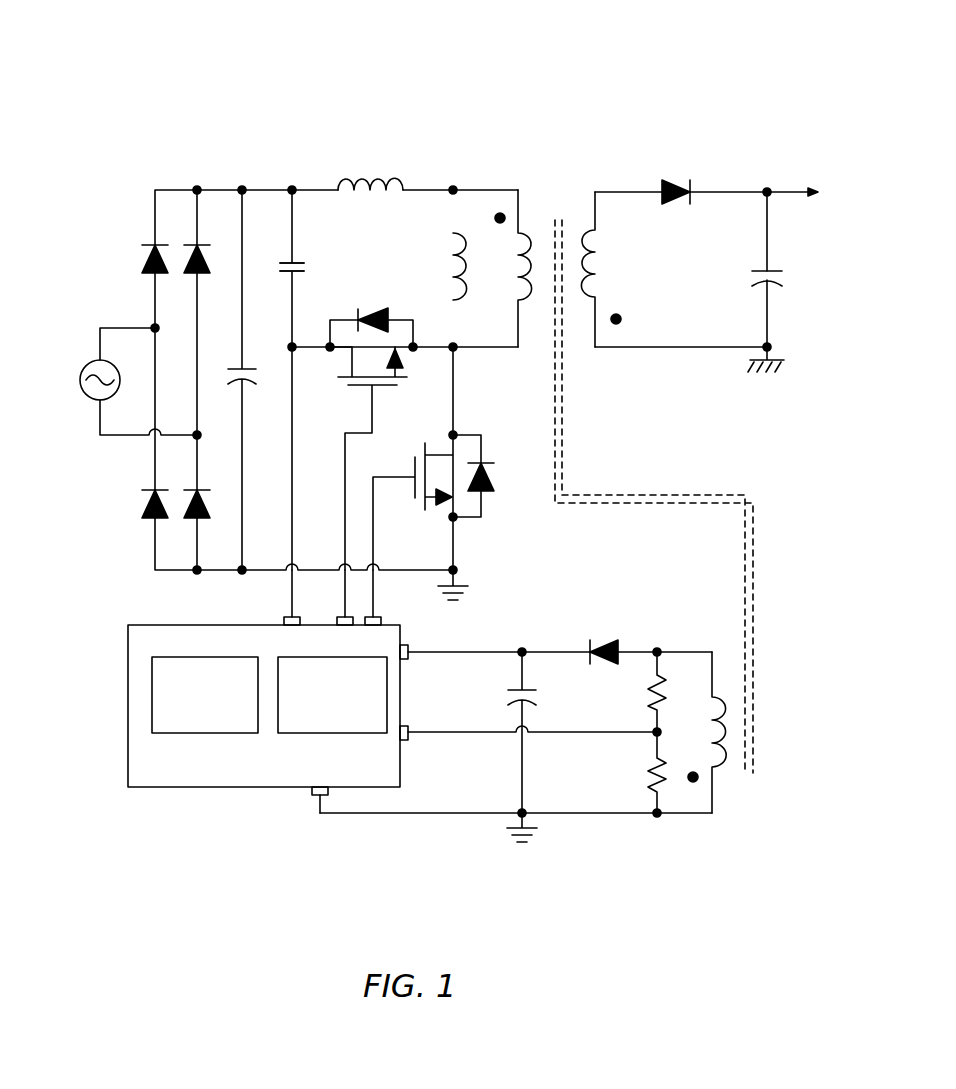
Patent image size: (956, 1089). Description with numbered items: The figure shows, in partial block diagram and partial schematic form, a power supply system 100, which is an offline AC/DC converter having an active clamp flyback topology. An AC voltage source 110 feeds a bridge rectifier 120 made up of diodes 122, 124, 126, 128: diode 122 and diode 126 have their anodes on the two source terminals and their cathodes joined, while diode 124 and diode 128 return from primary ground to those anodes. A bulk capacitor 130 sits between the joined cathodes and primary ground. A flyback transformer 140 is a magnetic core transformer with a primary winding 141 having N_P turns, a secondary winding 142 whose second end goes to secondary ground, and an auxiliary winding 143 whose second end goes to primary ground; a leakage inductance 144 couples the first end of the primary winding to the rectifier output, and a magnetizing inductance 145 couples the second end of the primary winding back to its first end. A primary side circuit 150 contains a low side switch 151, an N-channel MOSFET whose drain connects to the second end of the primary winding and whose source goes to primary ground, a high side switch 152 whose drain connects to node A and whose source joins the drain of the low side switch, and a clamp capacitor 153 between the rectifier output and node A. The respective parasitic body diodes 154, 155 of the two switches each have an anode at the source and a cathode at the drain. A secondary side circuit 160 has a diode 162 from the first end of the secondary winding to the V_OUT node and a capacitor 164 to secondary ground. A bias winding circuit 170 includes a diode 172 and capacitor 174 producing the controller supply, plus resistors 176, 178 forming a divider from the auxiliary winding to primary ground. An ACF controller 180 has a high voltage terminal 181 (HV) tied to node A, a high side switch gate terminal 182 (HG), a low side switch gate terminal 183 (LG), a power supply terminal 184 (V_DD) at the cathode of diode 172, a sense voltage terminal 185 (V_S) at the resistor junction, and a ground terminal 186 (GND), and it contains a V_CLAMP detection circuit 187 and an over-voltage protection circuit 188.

The power supply system 100 is at (120, 60).
The AC voltage source 110 is at (85, 368).
The bridge rectifier 120 is at (168, 182).
The diode 122 is at (150, 268).
The diode 124 is at (148, 512).
The diode 126 is at (205, 272).
The diode 128 is at (205, 510).
The bulk capacitor 130 is at (248, 380).
The flyback transformer 140 is at (535, 145).
The primary winding 141 is at (530, 305).
The secondary winding 142 is at (606, 264).
The auxiliary winding 143 is at (725, 765).
The leakage inductance 144 is at (365, 172).
The magnetizing inductance 145 is at (447, 270).
The primary side circuit 150 is at (270, 182).
The low side switch 151 is at (438, 455).
The high side switch 152 is at (345, 372).
The clamp capacitor 153 is at (290, 265).
The parasitic diode 154 is at (490, 490).
The parasitic diode 155 is at (375, 315).
The secondary side circuit 160 is at (640, 170).
The diode 162 is at (695, 190).
The capacitor 164 is at (775, 275).
The bias winding circuit 170 is at (656, 605).
The diode 172 is at (610, 645).
The capacitor 174 is at (532, 695).
The resistor 176 is at (650, 688).
The resistor 178 is at (650, 768).
The ACF controller 180 is at (128, 700).
The high voltage terminal 181 is at (285, 619).
The high side switch gate terminal 182 is at (337, 621).
The low side switch gate terminal 183 is at (383, 621).
The power supply terminal 184 is at (410, 652).
The sense voltage terminal 185 is at (408, 738).
The ground terminal 186 is at (315, 795).
The V_CLAMP detection circuit 187 is at (200, 735).
The over-voltage protection (OVP) circuit 188 is at (295, 735).